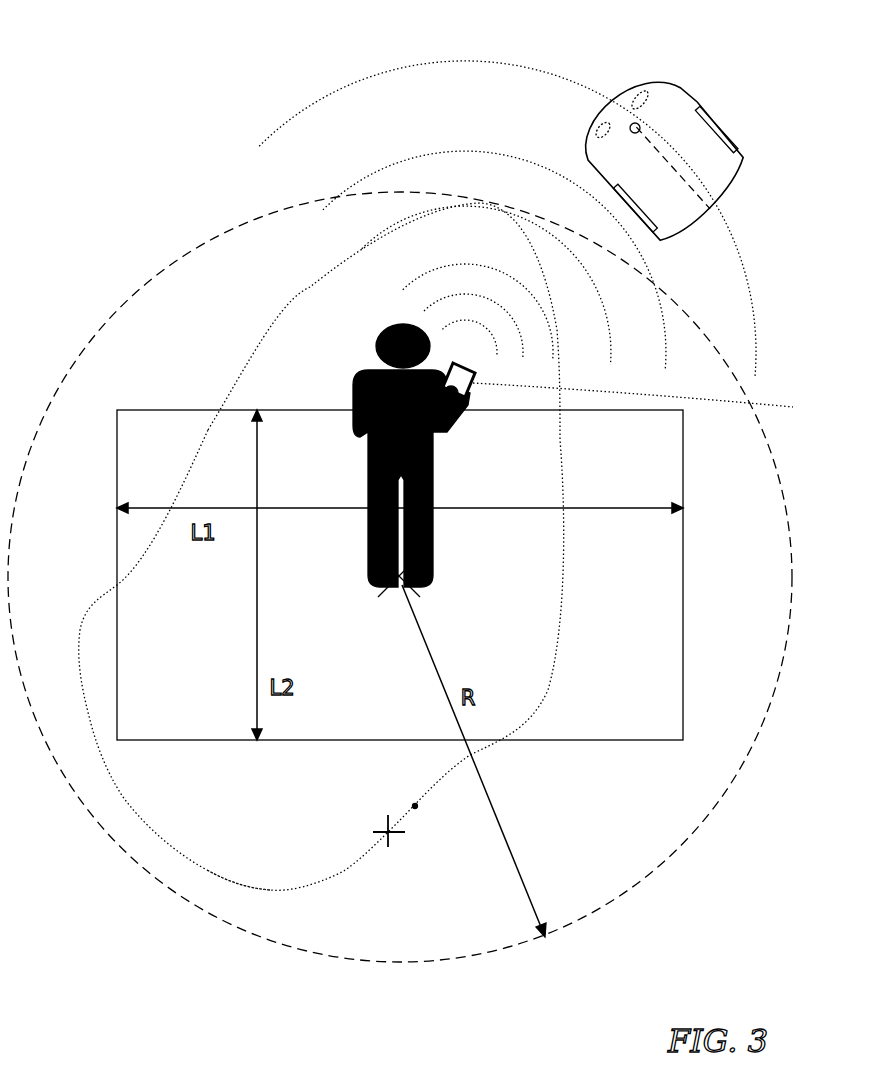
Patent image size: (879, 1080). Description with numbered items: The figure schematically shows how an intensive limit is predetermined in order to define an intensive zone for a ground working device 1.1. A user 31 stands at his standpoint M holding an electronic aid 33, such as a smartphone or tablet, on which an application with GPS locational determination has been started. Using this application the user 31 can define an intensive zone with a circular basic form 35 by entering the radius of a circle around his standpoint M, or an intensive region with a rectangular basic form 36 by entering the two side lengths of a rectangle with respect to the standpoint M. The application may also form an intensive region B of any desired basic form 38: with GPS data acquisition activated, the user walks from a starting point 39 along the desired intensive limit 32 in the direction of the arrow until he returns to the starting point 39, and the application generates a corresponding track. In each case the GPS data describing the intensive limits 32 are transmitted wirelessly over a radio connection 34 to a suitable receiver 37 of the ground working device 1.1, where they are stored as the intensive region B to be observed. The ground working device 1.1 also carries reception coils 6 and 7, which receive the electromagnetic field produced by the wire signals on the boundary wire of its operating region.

The ground working device 1.1 is at (705, 155).
The reception coil 6 is at (633, 97).
The reception coil 7 is at (602, 127).
The receiver 37 is at (640, 124).
The user 31 is at (282, 367).
The intensive limit 32 is at (208, 871).
The electronic aid 33 is at (638, 392).
The radio connection 34 is at (392, 127).
The circular basic form 35 is at (82, 353).
The rectangular basic form 36 is at (166, 741).
The any desired basic form 38 is at (270, 891).
The starting point 39 is at (392, 846).
The intensive region B is at (368, 372).
The standpoint M is at (396, 586).